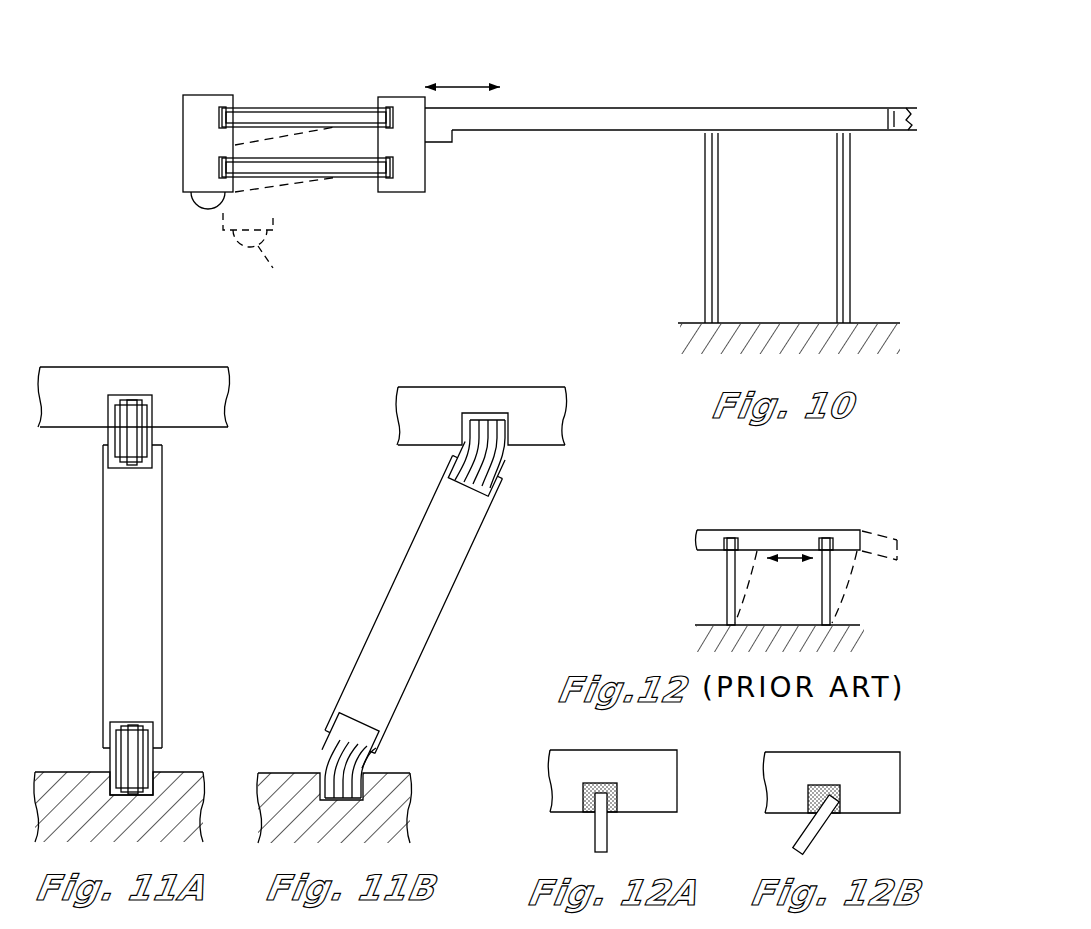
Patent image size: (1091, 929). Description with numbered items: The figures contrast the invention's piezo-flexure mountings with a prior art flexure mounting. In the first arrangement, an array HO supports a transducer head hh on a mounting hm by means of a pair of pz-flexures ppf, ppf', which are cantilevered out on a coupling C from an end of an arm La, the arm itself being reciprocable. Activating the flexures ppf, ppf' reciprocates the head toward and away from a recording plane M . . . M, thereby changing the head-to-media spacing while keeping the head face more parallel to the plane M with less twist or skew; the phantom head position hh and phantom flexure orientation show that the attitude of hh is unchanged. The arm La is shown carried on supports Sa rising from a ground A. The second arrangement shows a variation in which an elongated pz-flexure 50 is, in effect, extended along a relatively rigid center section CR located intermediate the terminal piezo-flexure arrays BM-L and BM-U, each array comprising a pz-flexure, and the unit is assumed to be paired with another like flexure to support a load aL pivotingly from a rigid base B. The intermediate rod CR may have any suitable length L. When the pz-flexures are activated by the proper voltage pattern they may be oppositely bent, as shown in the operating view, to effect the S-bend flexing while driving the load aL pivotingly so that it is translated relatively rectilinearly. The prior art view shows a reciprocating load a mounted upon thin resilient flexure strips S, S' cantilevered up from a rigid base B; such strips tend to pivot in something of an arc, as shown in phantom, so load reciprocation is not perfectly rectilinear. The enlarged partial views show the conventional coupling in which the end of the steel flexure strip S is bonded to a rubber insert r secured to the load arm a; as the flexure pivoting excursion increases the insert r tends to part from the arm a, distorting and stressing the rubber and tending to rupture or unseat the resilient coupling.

In FIG. 10, the array HO is at (427, 73).
In FIG. 10, the pz-flexure ppf is at (306, 108).
In FIG. 10, the pz-flexure ppf' is at (306, 197).
In FIG. 10, the mounting hm is at (137, 182).
In FIG. 10, the transducer head hh is at (200, 206).
In FIG. 10, the recording plane M is at (480, 243).
In FIG. 10, the coupling C is at (428, 160).
In FIG. 10, the arm La is at (613, 108).
In FIG. 10, the support strut Sa is at (705, 212).
In FIG. 10, the base ground A is at (862, 323).
In FIG. 11A, the load aL is at (115, 367).
In FIG. 11B, the load aL is at (500, 387).
In FIG. 11A, the center section CR is at (130, 418).
In FIG. 11A, the piezo-flexure array BM-U is at (160, 452).
In FIG. 11A, the piezo-flexure array BM-L is at (160, 738).
In FIG. 11A, the length L is at (77, 446).
In FIG. 11B, the length L is at (523, 488).
In FIG. 11A, the elongated pz-flexure 50 is at (204, 567).
In FIG. 11B, the elongated pz-flexure 50 is at (366, 562).
In FIG. 11A, the rigid base B is at (80, 823).
In FIG. 11B, the rigid base B is at (296, 818).
In FIG. 12, the rigid base B is at (857, 635).
In FIG. 12, the load a is at (778, 530).
In FIG. 12A, the load a is at (657, 785).
In FIG. 12B, the load a is at (882, 785).
In FIG. 12, the flexure strip S' is at (718, 581).
In FIG. 12, the flexure strip S is at (821, 581).
In FIG. 12A, the flexure strip S is at (619, 826).
In FIG. 12B, the flexure strip S is at (822, 827).
In FIG. 12A, the rubber insert r is at (592, 810).
In FIG. 12B, the rubber insert r is at (812, 812).